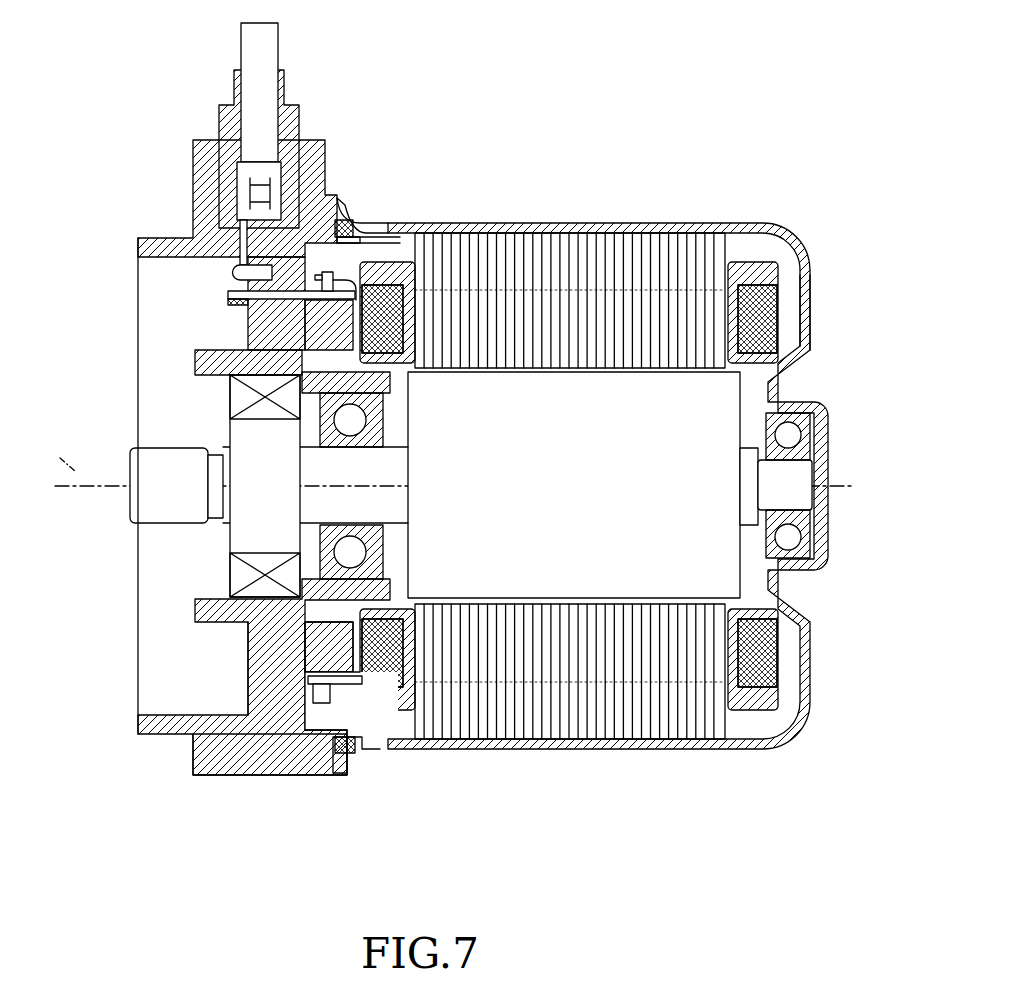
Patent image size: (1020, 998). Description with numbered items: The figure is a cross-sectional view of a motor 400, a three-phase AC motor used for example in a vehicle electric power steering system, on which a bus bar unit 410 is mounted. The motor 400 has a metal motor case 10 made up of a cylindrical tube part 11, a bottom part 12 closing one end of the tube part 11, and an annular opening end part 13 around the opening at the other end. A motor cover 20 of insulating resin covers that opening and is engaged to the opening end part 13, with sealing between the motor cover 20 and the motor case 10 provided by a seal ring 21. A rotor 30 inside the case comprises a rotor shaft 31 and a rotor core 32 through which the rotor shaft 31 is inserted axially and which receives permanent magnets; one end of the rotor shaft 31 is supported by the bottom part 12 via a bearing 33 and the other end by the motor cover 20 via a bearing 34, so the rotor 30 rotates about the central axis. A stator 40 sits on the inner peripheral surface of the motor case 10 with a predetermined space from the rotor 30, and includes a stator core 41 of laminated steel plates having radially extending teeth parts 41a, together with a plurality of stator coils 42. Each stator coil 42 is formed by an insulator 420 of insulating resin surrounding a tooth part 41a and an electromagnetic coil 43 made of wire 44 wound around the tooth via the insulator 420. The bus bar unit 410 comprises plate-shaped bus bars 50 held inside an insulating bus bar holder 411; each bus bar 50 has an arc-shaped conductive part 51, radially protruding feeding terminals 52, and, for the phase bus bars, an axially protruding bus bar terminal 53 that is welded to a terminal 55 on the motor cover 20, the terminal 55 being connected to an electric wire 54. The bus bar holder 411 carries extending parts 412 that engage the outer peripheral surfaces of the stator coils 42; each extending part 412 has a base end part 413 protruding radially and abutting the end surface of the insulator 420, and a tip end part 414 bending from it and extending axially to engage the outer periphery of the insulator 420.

The motor 400 is at (462, 458).
The motor case 10 is at (614, 429).
The tube part 11 is at (640, 223).
The bottom part 12 is at (810, 323).
The opening end part 13 is at (346, 201).
The motor cover 20 is at (239, 458).
The seal ring 21 is at (360, 260).
The rotor 30 is at (475, 483).
The rotor shaft 31 is at (793, 470).
The rotor core 32 is at (707, 572).
The bearing 33 is at (795, 430).
The bearing 34 is at (345, 565).
The stator 40 is at (617, 502).
The stator core 41 is at (530, 233).
The teeth parts 41a is at (567, 243).
The stator coil 42 is at (565, 565).
The insulator 420 is at (377, 708).
The electromagnetic coil 43 is at (397, 690).
The wire 44 is at (357, 282).
The bus bar 50 is at (238, 386).
The arc-shaped conductive part 51 is at (313, 657).
The feeding terminal 52 is at (328, 272).
The bus bar terminal 53 is at (300, 305).
The electric wire 54 is at (250, 193).
The terminal 55 is at (233, 291).
The bus bar unit 410 is at (300, 672).
The bus bar holder 411 is at (307, 683).
The extending part 412 is at (362, 720).
The base end part 413 is at (353, 703).
The tip end part 414 is at (372, 713).